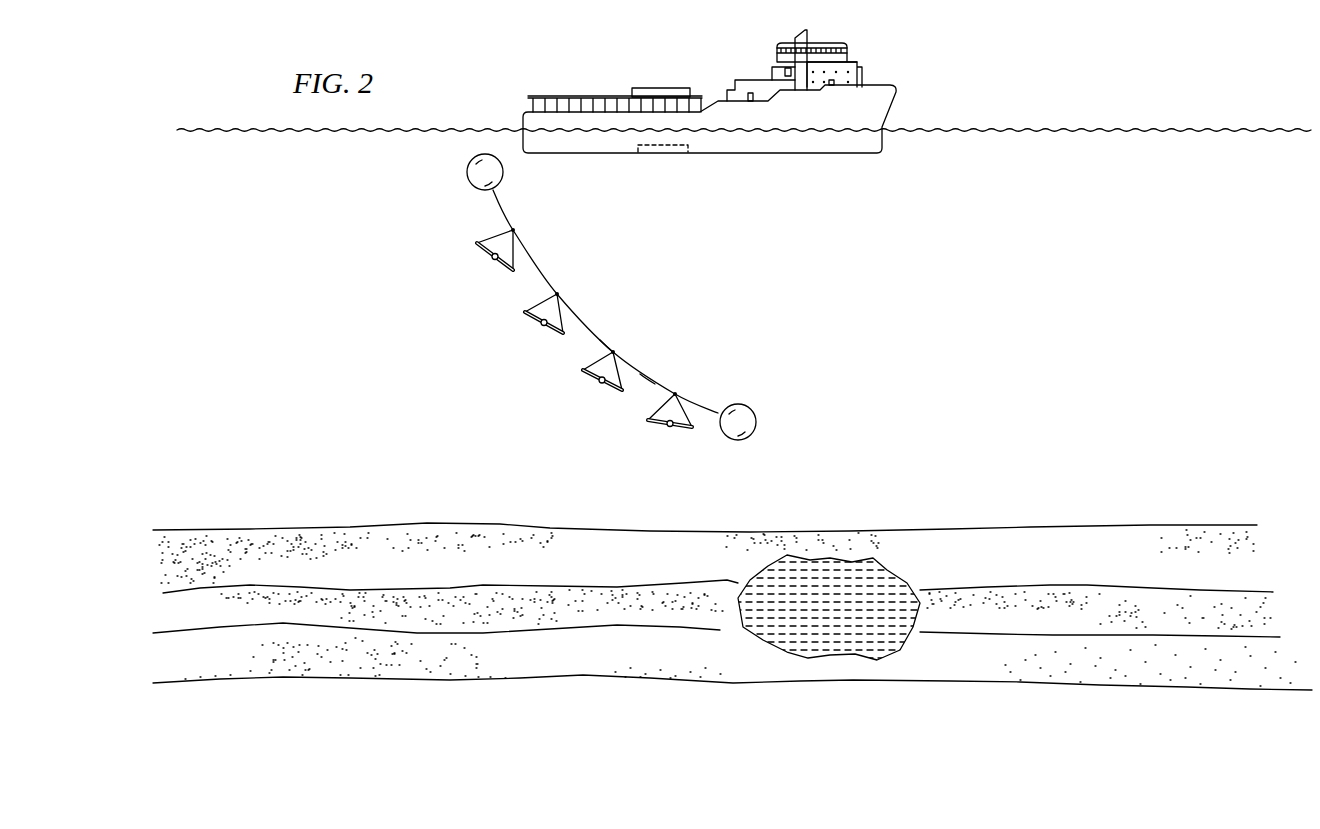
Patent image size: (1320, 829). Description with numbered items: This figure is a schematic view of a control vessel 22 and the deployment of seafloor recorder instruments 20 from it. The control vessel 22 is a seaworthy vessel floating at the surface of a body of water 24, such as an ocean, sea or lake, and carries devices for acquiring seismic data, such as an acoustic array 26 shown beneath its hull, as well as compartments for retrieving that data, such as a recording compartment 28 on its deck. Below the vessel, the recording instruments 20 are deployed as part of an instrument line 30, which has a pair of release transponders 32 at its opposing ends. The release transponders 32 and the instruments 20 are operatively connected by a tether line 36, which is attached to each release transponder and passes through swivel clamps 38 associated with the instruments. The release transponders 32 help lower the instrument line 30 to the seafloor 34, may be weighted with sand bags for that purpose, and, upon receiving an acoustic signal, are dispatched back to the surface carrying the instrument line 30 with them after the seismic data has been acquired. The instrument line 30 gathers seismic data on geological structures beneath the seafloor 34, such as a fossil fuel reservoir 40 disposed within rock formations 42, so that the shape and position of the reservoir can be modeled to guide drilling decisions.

The seafloor recorder instrument 20 is at (526, 323).
The control vessel 22 is at (896, 92).
The body of water 24 is at (1019, 319).
The acoustic array 26 is at (667, 156).
The recording compartment 28 is at (661, 87).
The instrument line 30 is at (613, 311).
The release transponder 32 is at (466, 176).
The seafloor 34 is at (1107, 525).
The tether line 36 is at (653, 377).
The swivel clamp 38 is at (614, 351).
The fossil fuel reservoir 40 is at (839, 615).
The rock formations 42 is at (444, 565).